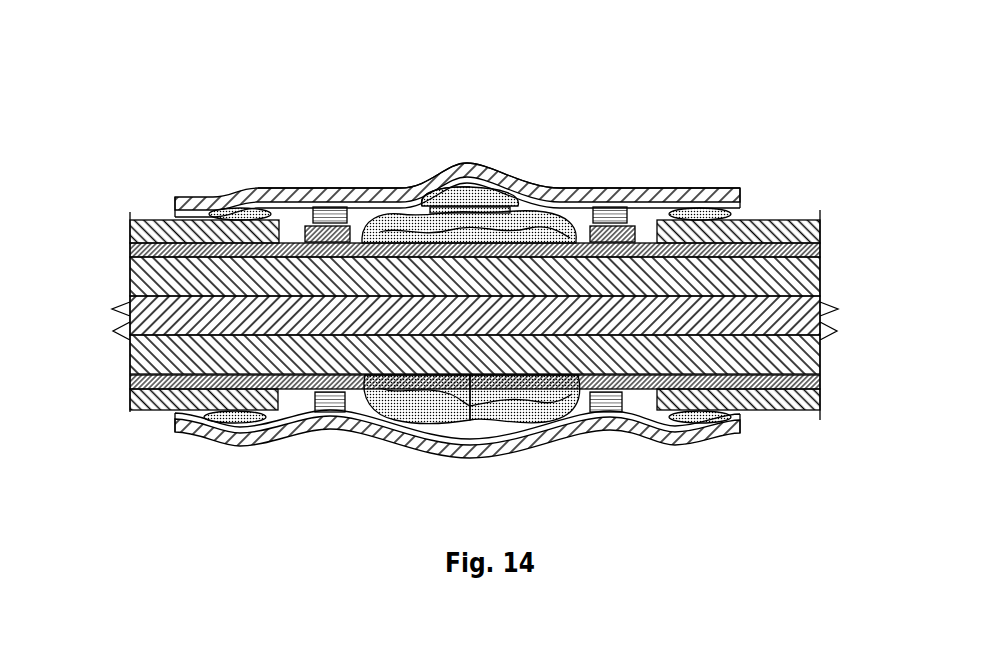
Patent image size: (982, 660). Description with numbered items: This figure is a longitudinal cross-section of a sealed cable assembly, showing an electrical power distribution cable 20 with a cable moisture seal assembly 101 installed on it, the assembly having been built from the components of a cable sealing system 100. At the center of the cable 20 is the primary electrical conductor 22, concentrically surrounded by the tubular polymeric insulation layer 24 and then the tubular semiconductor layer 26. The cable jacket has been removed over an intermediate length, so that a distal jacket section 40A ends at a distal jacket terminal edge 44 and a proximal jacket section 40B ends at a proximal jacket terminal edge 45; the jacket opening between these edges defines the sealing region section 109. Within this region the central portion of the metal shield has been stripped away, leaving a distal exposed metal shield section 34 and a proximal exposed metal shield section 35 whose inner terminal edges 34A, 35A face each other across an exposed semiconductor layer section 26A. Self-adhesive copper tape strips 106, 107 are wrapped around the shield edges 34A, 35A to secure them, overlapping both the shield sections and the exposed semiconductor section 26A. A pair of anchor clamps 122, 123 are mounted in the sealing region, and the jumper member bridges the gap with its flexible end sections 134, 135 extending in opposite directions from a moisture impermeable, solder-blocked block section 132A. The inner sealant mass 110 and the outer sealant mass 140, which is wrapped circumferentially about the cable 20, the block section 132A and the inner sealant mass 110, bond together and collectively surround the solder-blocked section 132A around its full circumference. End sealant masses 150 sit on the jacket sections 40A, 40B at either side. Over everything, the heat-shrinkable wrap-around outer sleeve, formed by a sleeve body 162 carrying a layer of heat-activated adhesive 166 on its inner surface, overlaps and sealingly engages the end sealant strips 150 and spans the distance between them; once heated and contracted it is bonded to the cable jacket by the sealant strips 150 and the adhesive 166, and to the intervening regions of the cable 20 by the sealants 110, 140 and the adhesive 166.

The electrical power distribution cable 20 is at (148, 149).
The primary electrical conductor 22 is at (130, 337).
The tubular polymeric insulation layer 24 is at (130, 290).
The tubular semiconductor layer 26 is at (158, 257).
The exposed semiconductor layer section 26A is at (466, 207).
The distal exposed metal shield section 34 is at (203, 197).
The inner terminal edge of distal exposed metal shield section 34A is at (332, 412).
The proximal exposed metal shield section 35 is at (765, 250).
The inner terminal edge of proximal exposed metal shield section 35A is at (606, 415).
The distal jacket section 40A is at (150, 410).
The proximal jacket section 40B is at (780, 412).
The distal jacket terminal edge 44 is at (266, 204).
The proximal jacket terminal edge 45 is at (672, 208).
The cable sealing system 100 is at (725, 163).
The cable moisture seal assembly 101 is at (735, 97).
The self-adhesive copper tape strip 106 is at (383, 425).
The self-adhesive copper tape strip 107 is at (548, 425).
The sealing region section 109 is at (448, 105).
The inner sealant mass 110 is at (400, 220).
The anchor clamp 122 is at (322, 205).
The anchor clamp 123 is at (600, 207).
The moisture impermeable block section 132A is at (505, 185).
The end section of jumper member 134 is at (290, 200).
The end section of jumper member 135 is at (632, 195).
The outer sealant mass 140 is at (452, 190).
The end sealant mass 150 is at (220, 437).
The sleeve body 162 is at (243, 435).
The heat-activated adhesive layer 166 is at (305, 414).